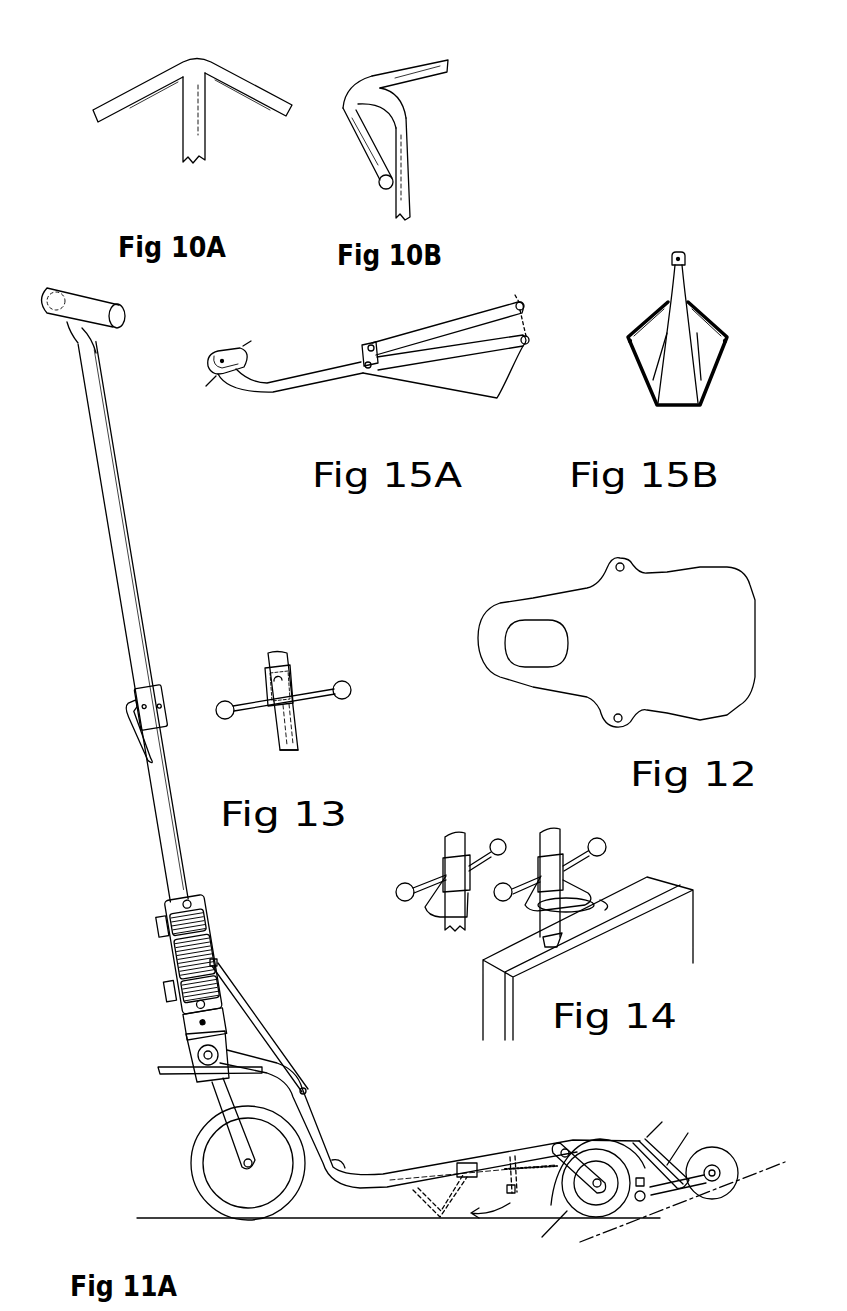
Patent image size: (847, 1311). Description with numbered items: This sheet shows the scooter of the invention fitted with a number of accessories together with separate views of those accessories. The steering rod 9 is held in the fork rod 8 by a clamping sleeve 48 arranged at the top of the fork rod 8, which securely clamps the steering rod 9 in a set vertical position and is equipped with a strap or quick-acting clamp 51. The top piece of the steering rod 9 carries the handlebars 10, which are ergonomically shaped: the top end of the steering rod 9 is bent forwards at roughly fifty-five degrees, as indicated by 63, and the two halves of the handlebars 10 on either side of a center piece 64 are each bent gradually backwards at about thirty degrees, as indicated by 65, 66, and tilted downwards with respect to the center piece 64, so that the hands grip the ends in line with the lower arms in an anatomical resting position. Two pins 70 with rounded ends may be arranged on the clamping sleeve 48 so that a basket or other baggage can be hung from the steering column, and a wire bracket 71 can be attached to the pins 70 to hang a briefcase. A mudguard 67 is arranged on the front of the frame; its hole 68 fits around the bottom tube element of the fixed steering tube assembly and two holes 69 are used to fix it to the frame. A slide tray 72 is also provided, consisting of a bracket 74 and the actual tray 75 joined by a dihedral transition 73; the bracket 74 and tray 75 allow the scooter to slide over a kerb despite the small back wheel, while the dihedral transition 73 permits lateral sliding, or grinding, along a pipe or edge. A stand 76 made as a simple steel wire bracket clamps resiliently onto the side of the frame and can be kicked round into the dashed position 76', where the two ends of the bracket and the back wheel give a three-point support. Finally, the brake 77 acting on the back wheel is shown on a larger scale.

In FIG. 13, the fork rod 8 is at (302, 735).
In FIG. 10A, the steering rod 9 is at (200, 136).
In FIG. 10B, the steering rod 9 is at (403, 163).
In FIG. 10A, the handlebars 10 is at (337, 52).
In FIG. 13, the clamping sleeve 48 is at (298, 678).
In FIG. 13, the quick-acting clamp 51 is at (285, 735).
In FIG. 10B, the forward bend of the steering rod 63 is at (393, 113).
In FIG. 10B, the center piece 64 is at (355, 78).
In FIG. 10A, the backward bend of handlebar half 65 is at (121, 96).
In FIG. 10B, the backward bend of handlebar half 66 is at (425, 63).
In FIG. 12, the mudguard 67 is at (563, 692).
In FIG. 11A, the mudguard 67 is at (171, 1075).
In FIG. 12, the hole 68 is at (500, 642).
In FIG. 12, the holes 69 is at (613, 560).
In FIG. 13, the pins 70 is at (322, 702).
In FIG. 14, the wire bracket 71 is at (588, 936).
In FIG. 15A, the slide tray 72 is at (294, 414).
In FIG. 15B, the slide tray 72 is at (736, 403).
In FIG. 11A, the slide tray 72 is at (363, 1188).
In FIG. 15A, the dihedral transition 73 is at (372, 380).
In FIG. 15A, the bracket 74 is at (300, 374).
In FIG. 15B, the bracket 74 is at (683, 288).
In FIG. 15A, the tray 75 is at (493, 382).
In FIG. 15B, the tray 75 is at (680, 387).
In FIG. 11A, the stand 76 is at (502, 1219).
In FIG. 11A, the stand position 76' is at (445, 1222).
In FIG. 11A, the brake 77 is at (721, 1218).